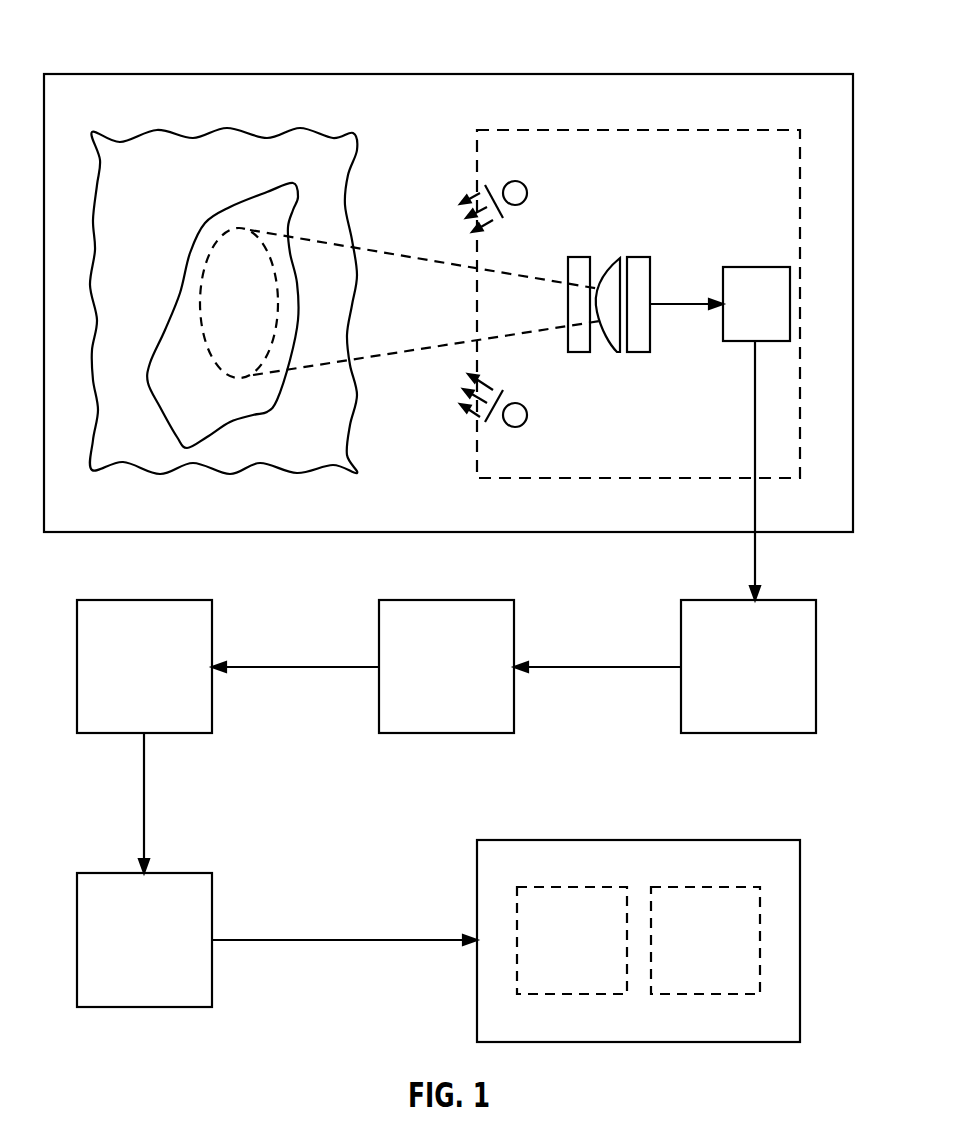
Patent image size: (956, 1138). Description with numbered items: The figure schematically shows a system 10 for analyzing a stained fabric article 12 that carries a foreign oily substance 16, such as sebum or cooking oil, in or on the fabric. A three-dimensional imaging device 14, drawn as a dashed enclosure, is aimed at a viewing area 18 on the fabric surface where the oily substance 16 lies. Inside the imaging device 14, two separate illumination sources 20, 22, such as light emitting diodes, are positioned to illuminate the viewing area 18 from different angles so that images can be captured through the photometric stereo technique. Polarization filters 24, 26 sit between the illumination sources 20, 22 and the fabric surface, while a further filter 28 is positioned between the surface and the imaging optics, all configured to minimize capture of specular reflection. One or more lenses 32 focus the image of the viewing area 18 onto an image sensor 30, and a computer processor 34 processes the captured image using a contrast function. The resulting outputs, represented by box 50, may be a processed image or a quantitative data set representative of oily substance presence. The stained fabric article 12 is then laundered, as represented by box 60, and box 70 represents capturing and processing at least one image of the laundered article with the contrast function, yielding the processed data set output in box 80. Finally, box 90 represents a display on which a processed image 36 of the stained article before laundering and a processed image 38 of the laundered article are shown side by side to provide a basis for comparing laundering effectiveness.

The system 10 is at (662, 41).
The stained fabric article 12 is at (155, 129).
The three-dimensional imaging device 14 is at (743, 130).
The oily substance 16 is at (292, 182).
The viewing area 18 is at (215, 246).
The illumination source 20 is at (521, 182).
The illumination source 22 is at (527, 405).
The filter 24 is at (496, 187).
The filter 26 is at (491, 423).
The filter 28 is at (578, 256).
The image sensor 30 is at (640, 256).
The lens 32 is at (612, 262).
The computer processor 34 is at (757, 265).
The processed image 36 is at (605, 887).
The processed image 38 is at (725, 887).
The outputs 50 is at (782, 598).
The laundering step 60 is at (483, 598).
The image capture and processing of laundered article 70 is at (185, 598).
The processed data set output of laundered article 80 is at (185, 872).
The display 90 is at (773, 840).